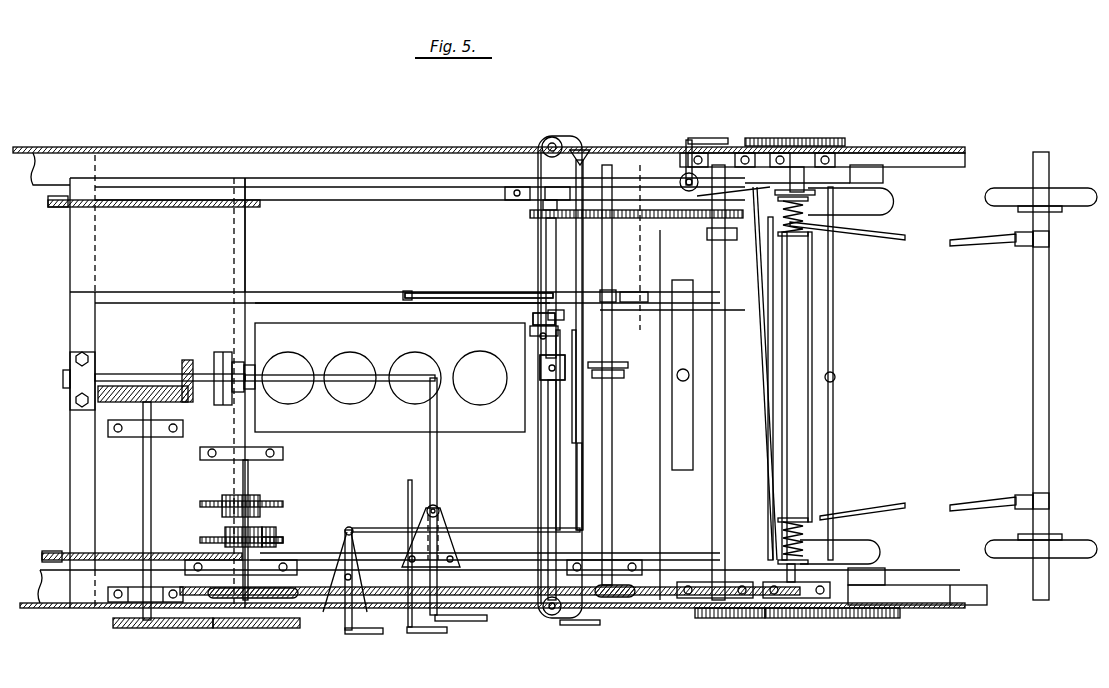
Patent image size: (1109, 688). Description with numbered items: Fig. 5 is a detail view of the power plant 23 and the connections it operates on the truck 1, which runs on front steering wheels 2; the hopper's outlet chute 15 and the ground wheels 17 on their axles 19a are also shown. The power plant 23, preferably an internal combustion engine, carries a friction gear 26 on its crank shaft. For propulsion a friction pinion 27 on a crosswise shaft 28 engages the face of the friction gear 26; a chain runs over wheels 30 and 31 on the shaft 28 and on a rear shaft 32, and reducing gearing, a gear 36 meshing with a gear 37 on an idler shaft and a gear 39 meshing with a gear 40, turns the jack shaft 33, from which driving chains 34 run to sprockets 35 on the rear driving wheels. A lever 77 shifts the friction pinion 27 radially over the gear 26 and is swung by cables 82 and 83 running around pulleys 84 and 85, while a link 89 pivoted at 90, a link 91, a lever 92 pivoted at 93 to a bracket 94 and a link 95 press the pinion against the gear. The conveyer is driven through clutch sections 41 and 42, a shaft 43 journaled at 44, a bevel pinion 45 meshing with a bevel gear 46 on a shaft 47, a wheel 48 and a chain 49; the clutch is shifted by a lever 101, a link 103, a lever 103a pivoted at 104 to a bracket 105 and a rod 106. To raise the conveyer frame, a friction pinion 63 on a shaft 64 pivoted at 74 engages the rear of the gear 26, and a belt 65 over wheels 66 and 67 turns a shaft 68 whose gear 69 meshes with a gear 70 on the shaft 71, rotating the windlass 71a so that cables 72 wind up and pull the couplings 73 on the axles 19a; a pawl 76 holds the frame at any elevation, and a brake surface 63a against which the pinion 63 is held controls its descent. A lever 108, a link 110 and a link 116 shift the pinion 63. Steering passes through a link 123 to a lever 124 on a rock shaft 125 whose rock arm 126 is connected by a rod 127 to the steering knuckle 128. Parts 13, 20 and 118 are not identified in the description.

The truck 1 is at (898, 596).
The front steering wheels 2 is at (875, 205).
The top rail 13 is at (358, 147).
The outlet chute 15 is at (652, 608).
The ground wheels 17 is at (1018, 196).
The axles 19a is at (1033, 390).
The rack bar 20 is at (510, 590).
The power plant 23 is at (390, 377).
The friction gear 26 is at (572, 440).
The friction pinion 27 is at (615, 368).
The shaft 28 is at (612, 460).
The wheel 30 is at (615, 584).
The wheel 31 is at (230, 600).
The shaft 32 is at (228, 530).
The jack shaft 33 is at (250, 238).
The driving chains 34 is at (163, 207).
The sprockets 35 is at (55, 207).
The gear 36 is at (243, 495).
The gear 37 is at (222, 506).
The gear 39 is at (276, 535).
The gear 40 is at (287, 541).
The clutch section 41 is at (232, 392).
The clutch section 42 is at (218, 352).
The shaft 43 is at (142, 374).
The journal 44 is at (78, 378).
The bevel pinion 45 is at (185, 362).
The bevel gear 46 is at (122, 386).
The shaft 47 is at (143, 461).
The wheel 48 is at (135, 628).
The chain 49 is at (275, 628).
The friction pinion 63 is at (533, 318).
The brake surface 63a is at (538, 336).
The shaft 64 is at (546, 260).
The belt 65 is at (625, 218).
The wheel 66 is at (538, 230).
The wheel 67 is at (725, 222).
The shaft 68 is at (712, 262).
The gear 69 is at (705, 618).
The gear 70 is at (800, 612).
The shaft 71 is at (785, 550).
The winding drum 71a is at (790, 462).
The cables 72 is at (862, 230).
The couplings 73 is at (1018, 246).
The pivot 74 is at (548, 193).
The pawl 76 is at (810, 138).
The lever 77 is at (556, 382).
The cable 82 is at (592, 640).
The cable 83 is at (580, 140).
The pulley 84 is at (545, 615).
The pulley 85 is at (542, 142).
The link 89 is at (577, 480).
The pivot 90 is at (589, 161).
The link 91 is at (502, 528).
The lever 92 is at (345, 540).
The pivot 93 is at (330, 612).
The bracket 94 is at (358, 568).
The link 95 is at (375, 636).
The shifting lever 101 is at (248, 366).
The link 103 is at (310, 384).
The lever 103a is at (437, 446).
The pivot 104 is at (427, 509).
The bracket 105 is at (458, 543).
The rod 106 is at (463, 621).
The lever 108 is at (558, 310).
The link 110 is at (432, 292).
The link 116 is at (422, 636).
The bar 118 is at (402, 312).
The link 123 is at (706, 138).
The lever 124 is at (688, 148).
The rock shaft 125 is at (680, 180).
The rock arm 126 is at (723, 197).
The rod 127 is at (762, 362).
The steering knuckle 128 is at (783, 523).